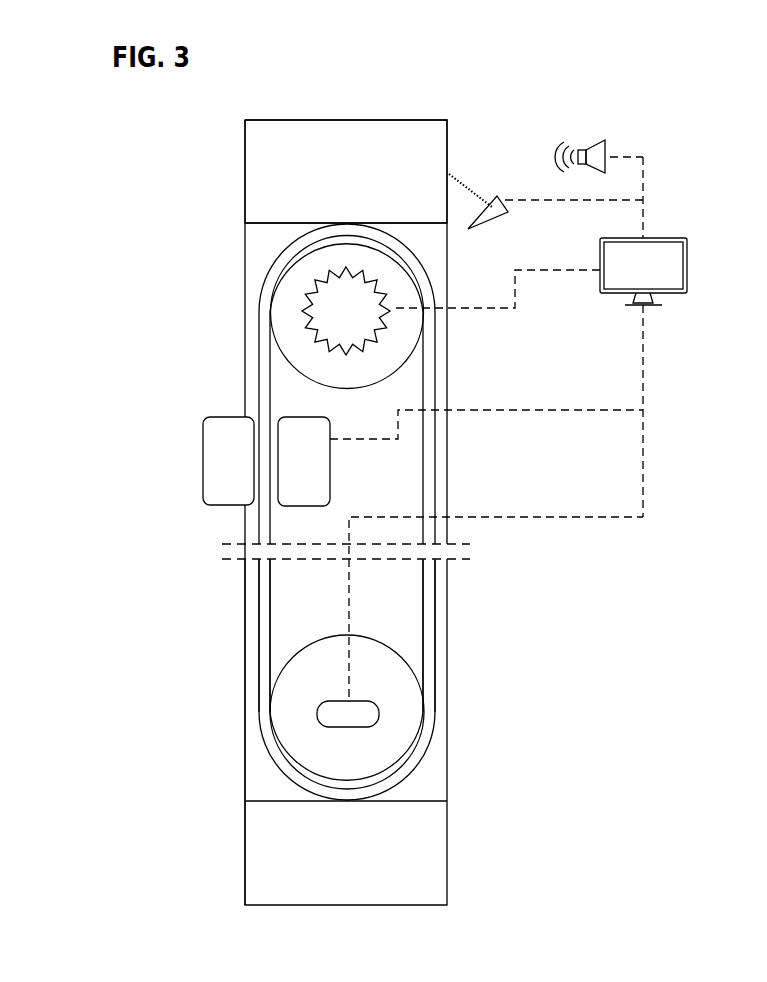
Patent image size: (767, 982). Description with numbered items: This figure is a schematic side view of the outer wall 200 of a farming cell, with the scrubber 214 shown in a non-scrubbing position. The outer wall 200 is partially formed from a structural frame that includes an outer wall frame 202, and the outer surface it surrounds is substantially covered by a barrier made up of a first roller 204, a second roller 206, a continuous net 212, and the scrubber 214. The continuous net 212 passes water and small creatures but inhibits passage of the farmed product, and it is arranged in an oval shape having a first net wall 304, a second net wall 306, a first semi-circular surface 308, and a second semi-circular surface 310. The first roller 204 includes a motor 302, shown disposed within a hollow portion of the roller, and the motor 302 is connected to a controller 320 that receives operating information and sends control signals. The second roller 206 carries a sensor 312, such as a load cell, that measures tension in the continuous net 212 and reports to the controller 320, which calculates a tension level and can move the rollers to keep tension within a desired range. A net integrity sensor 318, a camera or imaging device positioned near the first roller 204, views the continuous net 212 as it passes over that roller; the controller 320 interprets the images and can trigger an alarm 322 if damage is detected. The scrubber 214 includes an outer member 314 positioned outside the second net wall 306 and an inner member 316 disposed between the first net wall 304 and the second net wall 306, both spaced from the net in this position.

The outer wall 200 is at (208, 893).
The outer wall frame 202 is at (364, 189).
The first roller 204 is at (292, 287).
The second roller 206 is at (322, 680).
The continuous net 212 is at (430, 400).
The scrubber 214 is at (218, 384).
The motor 302 is at (363, 325).
The first net wall 304 is at (430, 610).
The second net wall 306 is at (267, 603).
The first semi-circular surface 308 is at (290, 255).
The second semi-circular surface 310 is at (415, 762).
The sensor 312 is at (380, 712).
The outer member 314 is at (218, 468).
The inner member 316 is at (313, 483).
The net integrity sensor 318 is at (493, 200).
The controller 320 is at (660, 280).
The alarm 322 is at (575, 145).